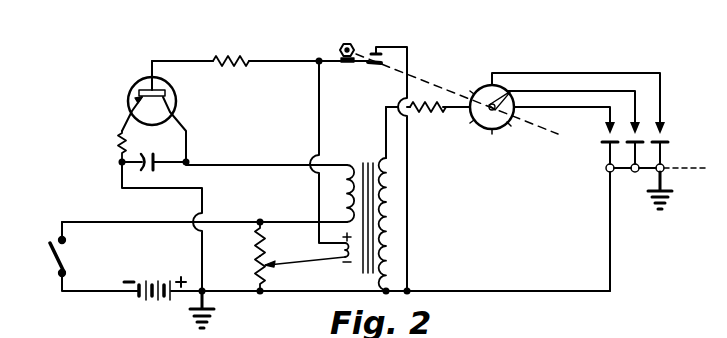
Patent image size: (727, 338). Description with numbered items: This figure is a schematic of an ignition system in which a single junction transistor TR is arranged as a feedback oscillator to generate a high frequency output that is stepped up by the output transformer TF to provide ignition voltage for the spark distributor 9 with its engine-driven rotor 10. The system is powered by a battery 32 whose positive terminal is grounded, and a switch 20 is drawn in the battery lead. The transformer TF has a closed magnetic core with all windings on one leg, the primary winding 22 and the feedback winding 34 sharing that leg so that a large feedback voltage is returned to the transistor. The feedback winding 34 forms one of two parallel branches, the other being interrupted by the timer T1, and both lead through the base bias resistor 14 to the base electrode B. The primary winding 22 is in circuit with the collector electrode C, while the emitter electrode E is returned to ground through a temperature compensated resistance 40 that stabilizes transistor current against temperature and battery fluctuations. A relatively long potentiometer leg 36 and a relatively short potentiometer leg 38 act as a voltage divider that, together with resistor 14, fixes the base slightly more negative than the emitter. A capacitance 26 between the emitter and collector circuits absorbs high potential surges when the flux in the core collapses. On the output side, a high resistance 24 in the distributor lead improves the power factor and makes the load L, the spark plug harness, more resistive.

The spark distributor 9 is at (498, 133).
The engine-driven rotor 10 is at (487, 86).
The base bias resistor 14 is at (232, 56).
The on-off switch 20 is at (50, 264).
The primary winding 22 is at (345, 196).
The high resistance 24 is at (431, 112).
The capacitance 26 is at (146, 172).
The battery 32 is at (165, 306).
The feedback winding 34 is at (342, 257).
The potentiometer leg 36 is at (257, 241).
The potentiometer leg 38 is at (257, 277).
The temperature compensated resistance 40 is at (116, 144).
The junction transistor TR is at (128, 90).
The base electrode B is at (148, 78).
The emitter electrode E is at (127, 114).
The collector electrode C is at (176, 111).
The timer T1 is at (345, 42).
The output transformer TF is at (368, 162).
The load L is at (663, 97).